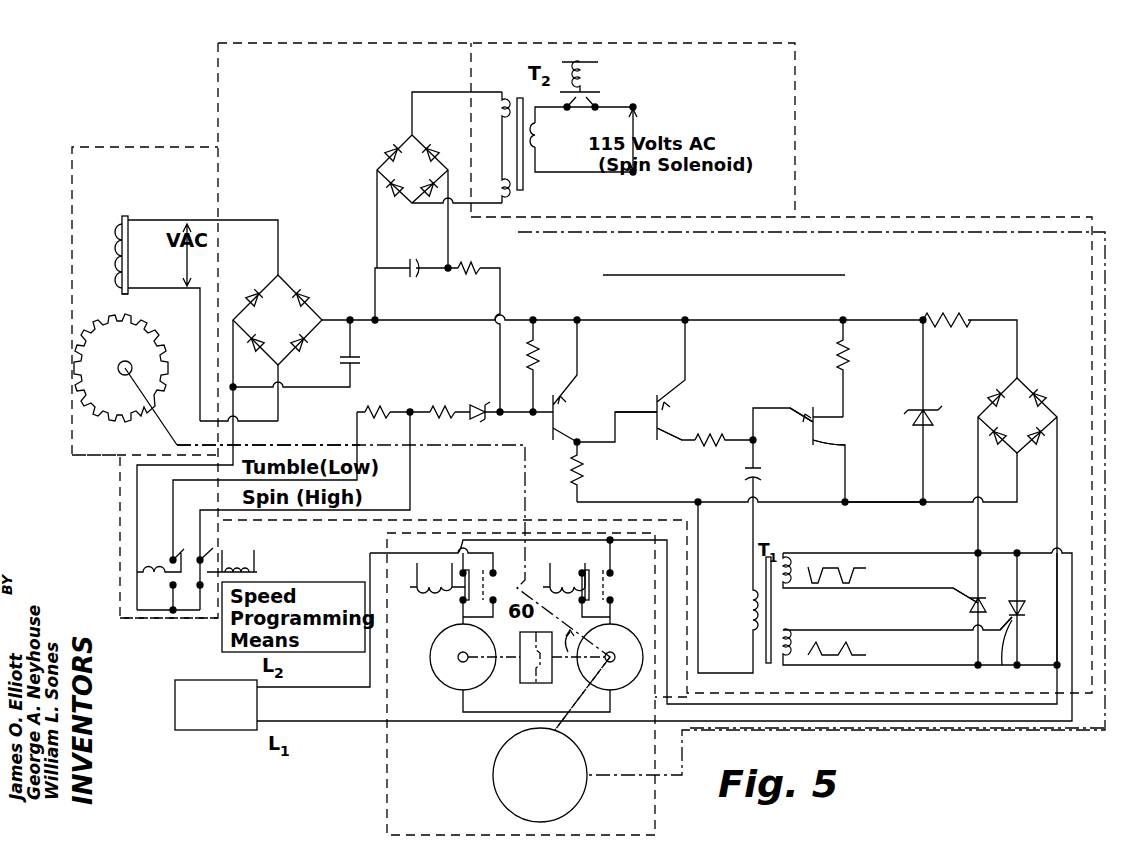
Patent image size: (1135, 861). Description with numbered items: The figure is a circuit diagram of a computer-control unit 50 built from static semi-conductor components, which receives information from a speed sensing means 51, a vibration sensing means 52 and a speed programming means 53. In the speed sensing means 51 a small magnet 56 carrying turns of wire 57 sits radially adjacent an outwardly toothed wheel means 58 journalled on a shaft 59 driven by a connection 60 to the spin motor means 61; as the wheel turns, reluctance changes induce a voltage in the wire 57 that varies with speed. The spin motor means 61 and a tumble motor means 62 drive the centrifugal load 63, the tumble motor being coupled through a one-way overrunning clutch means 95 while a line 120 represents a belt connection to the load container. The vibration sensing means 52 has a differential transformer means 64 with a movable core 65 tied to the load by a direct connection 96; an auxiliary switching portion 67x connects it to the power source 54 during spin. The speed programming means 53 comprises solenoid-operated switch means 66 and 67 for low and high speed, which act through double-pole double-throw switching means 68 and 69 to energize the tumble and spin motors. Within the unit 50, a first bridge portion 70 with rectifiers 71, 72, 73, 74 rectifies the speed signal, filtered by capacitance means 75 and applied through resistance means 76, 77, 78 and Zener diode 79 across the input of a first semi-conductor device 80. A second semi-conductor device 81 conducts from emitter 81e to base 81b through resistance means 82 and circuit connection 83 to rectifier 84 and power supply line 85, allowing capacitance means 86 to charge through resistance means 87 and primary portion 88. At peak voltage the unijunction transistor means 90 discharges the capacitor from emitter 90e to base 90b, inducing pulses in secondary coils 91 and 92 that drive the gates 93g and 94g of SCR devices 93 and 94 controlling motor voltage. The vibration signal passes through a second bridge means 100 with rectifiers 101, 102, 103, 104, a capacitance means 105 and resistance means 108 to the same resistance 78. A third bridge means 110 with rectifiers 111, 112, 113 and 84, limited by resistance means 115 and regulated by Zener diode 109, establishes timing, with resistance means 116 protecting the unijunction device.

The computer-control unit 50 is at (850, 215).
The speed sensing means 51 is at (70, 290).
The vibration sensing means 52 is at (795, 112).
The speed programming means 53 is at (118, 520).
The power source 54 is at (217, 732).
The small magnet 56 is at (128, 294).
The turns of wire 57 is at (130, 252).
The toothed wheel means 58 is at (148, 352).
The shaft 59 is at (150, 400).
The connection 60 is at (165, 444).
The spin motor means 61 is at (640, 676).
The tumble motor means 62 is at (430, 675).
The centrifugal load 63 is at (585, 810).
The differential transformer means 64 is at (532, 138).
The movable core 65 is at (524, 186).
The switch means 66 is at (181, 553).
The spin switching means 67 is at (208, 556).
The auxiliary solenoid-operated switching portion 67x is at (583, 95).
The double-pole double-throw switching means 68 is at (455, 598).
The double-pole double-throw switching portion 69 is at (606, 598).
The first bridge portion 70 is at (295, 311).
The rectifier 71 is at (308, 300).
The rectifier 72 is at (308, 340).
The rectifier 73 is at (262, 345).
The rectifier 74 is at (260, 290).
The capacitance means 75 is at (362, 362).
The resistance means 76 is at (372, 406).
The resistance means 77 is at (428, 406).
The resistance means 78 is at (526, 357).
The Zener diode 79 is at (484, 420).
The first semi-conductor device 80 is at (612, 398).
The second semi-conductor device 81 is at (668, 400).
The base 81b is at (642, 420).
The emitter 81e is at (668, 438).
The resistance means 82 is at (590, 480).
The circuit connection 83 is at (945, 504).
The rectifier 84 is at (1040, 445).
The power supply line 85 is at (1055, 530).
The capacitance means 86 is at (760, 470).
The resistance means 87 is at (712, 433).
The primary portion 88 is at (748, 602).
The unijunction transistor means 90 is at (828, 406).
The base 90b is at (830, 443).
The emitter 90e is at (805, 412).
The secondary coil 91 is at (792, 642).
The secondary coil 92 is at (790, 565).
The silicon-control rectifier device 93 is at (1012, 586).
The gate 93g is at (970, 600).
The silicon-control rectifier device 94 is at (1050, 592).
The gate 94g is at (1000, 656).
The overrunning clutch means 95 is at (528, 676).
The direct connection 96 is at (917, 731).
The second bridge means 100 is at (408, 180).
The rectifier means 101 is at (388, 146).
The rectifier means 102 is at (428, 145).
The rectifier means 103 is at (436, 190).
The rectifier means 104 is at (392, 196).
The capacitance means 105 is at (420, 262).
The resistance means 108 is at (470, 274).
The Zener diode means 109 is at (935, 412).
The third bridge means 110 is at (1022, 505).
The rectifier 111 is at (992, 388).
The rectifier 112 is at (1042, 396).
The rectifier 113 is at (990, 440).
The resistance means 115 is at (945, 318).
The resistance means 116 is at (852, 364).
The line 120 is at (558, 730).